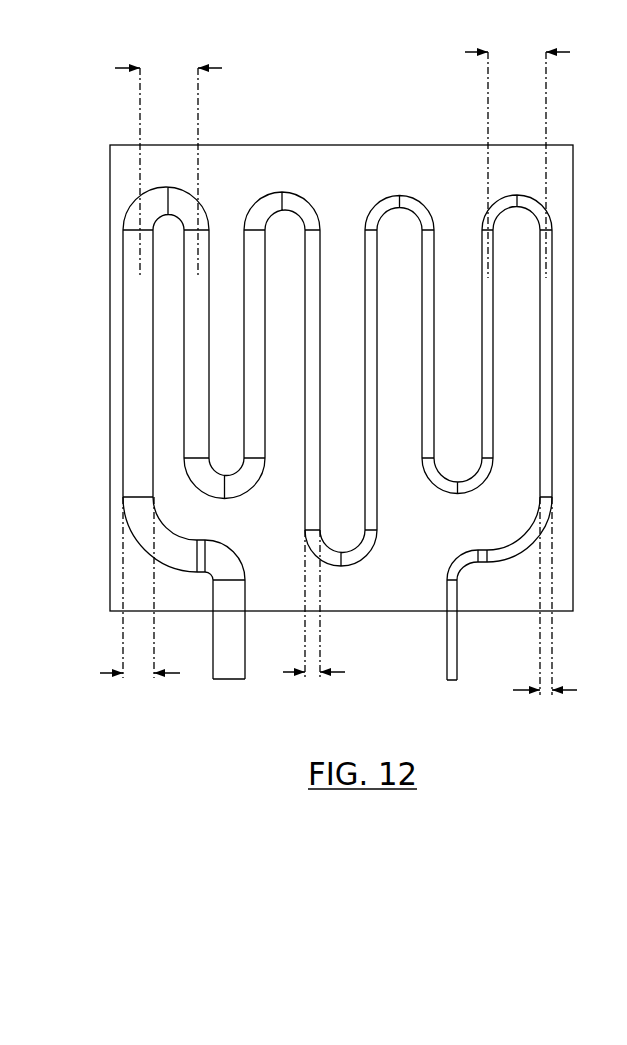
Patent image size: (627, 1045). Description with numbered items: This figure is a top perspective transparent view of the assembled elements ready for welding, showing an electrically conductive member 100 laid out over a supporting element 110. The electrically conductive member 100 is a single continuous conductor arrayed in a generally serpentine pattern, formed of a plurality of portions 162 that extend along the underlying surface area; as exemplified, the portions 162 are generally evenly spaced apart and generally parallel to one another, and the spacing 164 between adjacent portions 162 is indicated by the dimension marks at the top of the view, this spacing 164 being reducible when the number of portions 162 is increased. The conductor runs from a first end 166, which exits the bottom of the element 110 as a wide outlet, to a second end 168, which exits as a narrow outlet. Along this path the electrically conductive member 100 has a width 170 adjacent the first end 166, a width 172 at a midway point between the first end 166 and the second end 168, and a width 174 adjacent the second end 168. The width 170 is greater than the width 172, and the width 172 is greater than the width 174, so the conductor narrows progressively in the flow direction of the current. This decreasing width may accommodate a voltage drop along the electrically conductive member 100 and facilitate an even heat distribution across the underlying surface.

The electrically conductive member 100 is at (291, 427).
The substrate 110 is at (127, 155).
The portions 162 is at (200, 320).
The spacing 164 is at (213, 66).
The first end 166 is at (235, 665).
The second end 168 is at (460, 683).
The width 170 is at (178, 674).
The width 172 is at (338, 675).
The width 174 is at (566, 697).